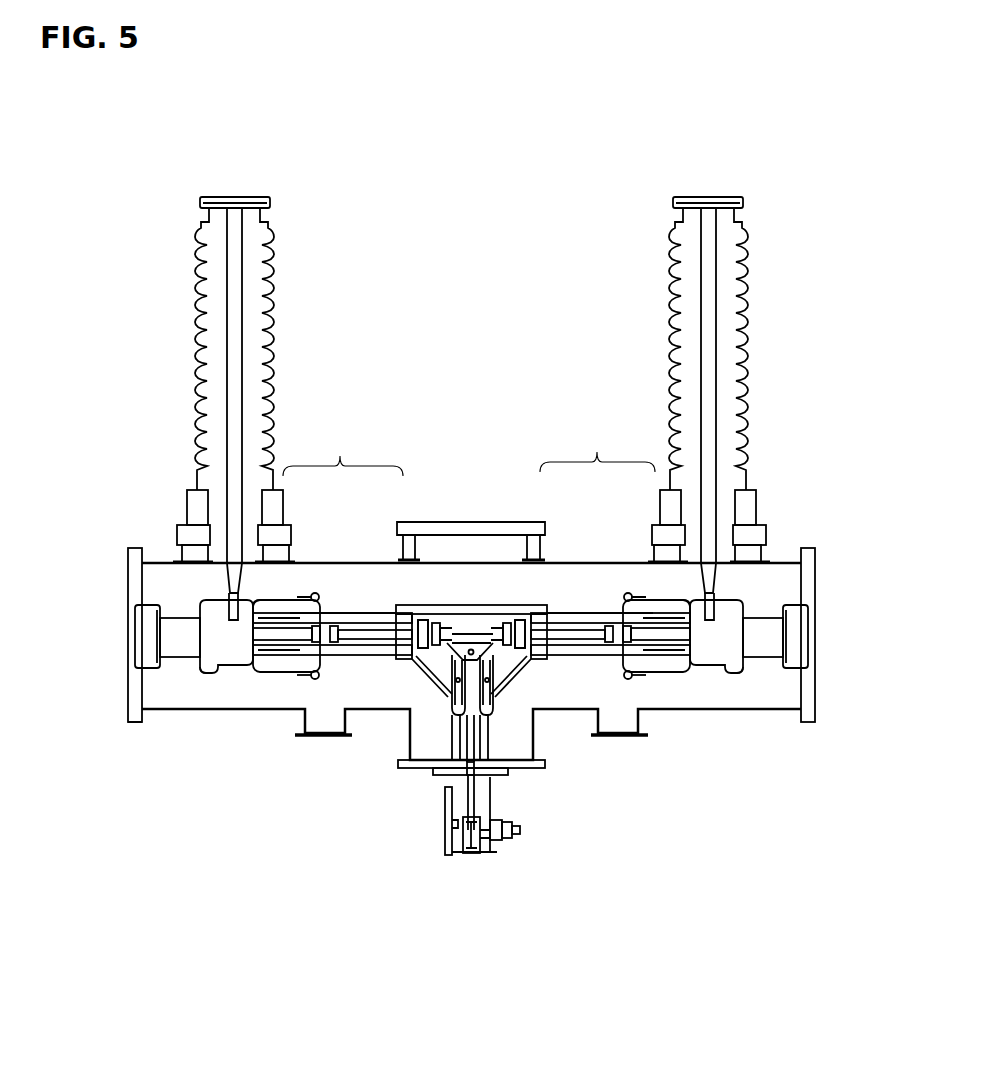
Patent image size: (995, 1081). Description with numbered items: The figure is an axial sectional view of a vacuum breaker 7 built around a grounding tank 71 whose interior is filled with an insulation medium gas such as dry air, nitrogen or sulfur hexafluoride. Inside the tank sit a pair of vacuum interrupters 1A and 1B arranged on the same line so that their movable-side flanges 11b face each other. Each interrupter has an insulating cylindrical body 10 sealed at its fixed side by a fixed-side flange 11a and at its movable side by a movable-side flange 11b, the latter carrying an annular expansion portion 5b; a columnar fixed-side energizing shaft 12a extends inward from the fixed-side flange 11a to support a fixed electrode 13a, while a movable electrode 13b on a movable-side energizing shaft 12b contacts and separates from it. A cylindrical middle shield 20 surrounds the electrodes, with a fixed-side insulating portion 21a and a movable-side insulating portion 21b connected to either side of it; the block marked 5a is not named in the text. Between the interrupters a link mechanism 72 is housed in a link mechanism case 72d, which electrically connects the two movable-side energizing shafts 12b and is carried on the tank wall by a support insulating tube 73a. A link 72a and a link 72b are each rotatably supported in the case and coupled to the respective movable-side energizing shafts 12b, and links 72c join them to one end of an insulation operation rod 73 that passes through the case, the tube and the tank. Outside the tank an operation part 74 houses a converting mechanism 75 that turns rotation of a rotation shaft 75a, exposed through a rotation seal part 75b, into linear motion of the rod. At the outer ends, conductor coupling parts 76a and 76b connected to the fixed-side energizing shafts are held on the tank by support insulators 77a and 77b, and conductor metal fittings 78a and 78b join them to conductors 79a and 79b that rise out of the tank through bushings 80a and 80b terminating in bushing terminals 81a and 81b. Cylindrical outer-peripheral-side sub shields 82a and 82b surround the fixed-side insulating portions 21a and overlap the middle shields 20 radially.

The vacuum breaker 7 is at (190, 778).
The insulating cylindrical body 10 is at (469, 448).
The fixed-side flange 11a is at (248, 660).
The movable-side flange 11b is at (400, 605).
The fixed-side energizing shaft 12a is at (205, 535).
The movable-side energizing shaft 12b is at (423, 630).
The fixed electrode 13a is at (312, 670).
The movable electrode 13b is at (333, 657).
The middle shield 20 is at (336, 600).
The fixed-side insulating portion 21a is at (298, 597).
The movable-side insulating portion 21b is at (375, 603).
The conductor block 5a is at (258, 650).
The annular expansion portion 5b is at (450, 665).
The vacuum interrupter 1A is at (615, 668).
The vacuum interrupter 1B is at (327, 670).
The grounding tank 71 is at (446, 496).
The link mechanism 72 is at (479, 615).
The link 72a is at (495, 690).
The link 72b is at (466, 742).
The links 72c is at (445, 690).
The link mechanism case 72d is at (456, 600).
The insulation operation rod 73 is at (462, 762).
The support insulating tube 73a is at (508, 766).
The operation part 74 is at (470, 852).
The converting mechanism 75 is at (492, 852).
The rotation shaft 75a is at (506, 828).
The rotation seal part 75b is at (512, 840).
The conductor coupling part 76a is at (735, 670).
The conductor coupling part 76b is at (210, 670).
The support insulator 77a is at (752, 615).
The support insulator 77b is at (185, 622).
The conductor metal fitting 78a is at (698, 660).
The conductor metal fitting 78b is at (258, 603).
The conductor 79a is at (705, 320).
The conductor 79b is at (240, 330).
The bushing 80a is at (748, 330).
The bushing 80b is at (200, 332).
The bushing terminal 81a is at (725, 200).
The bushing terminal 81b is at (215, 198).
The outer-peripheral-side sub shield 82a is at (668, 660).
The outer-peripheral-side sub shield 82b is at (272, 660).